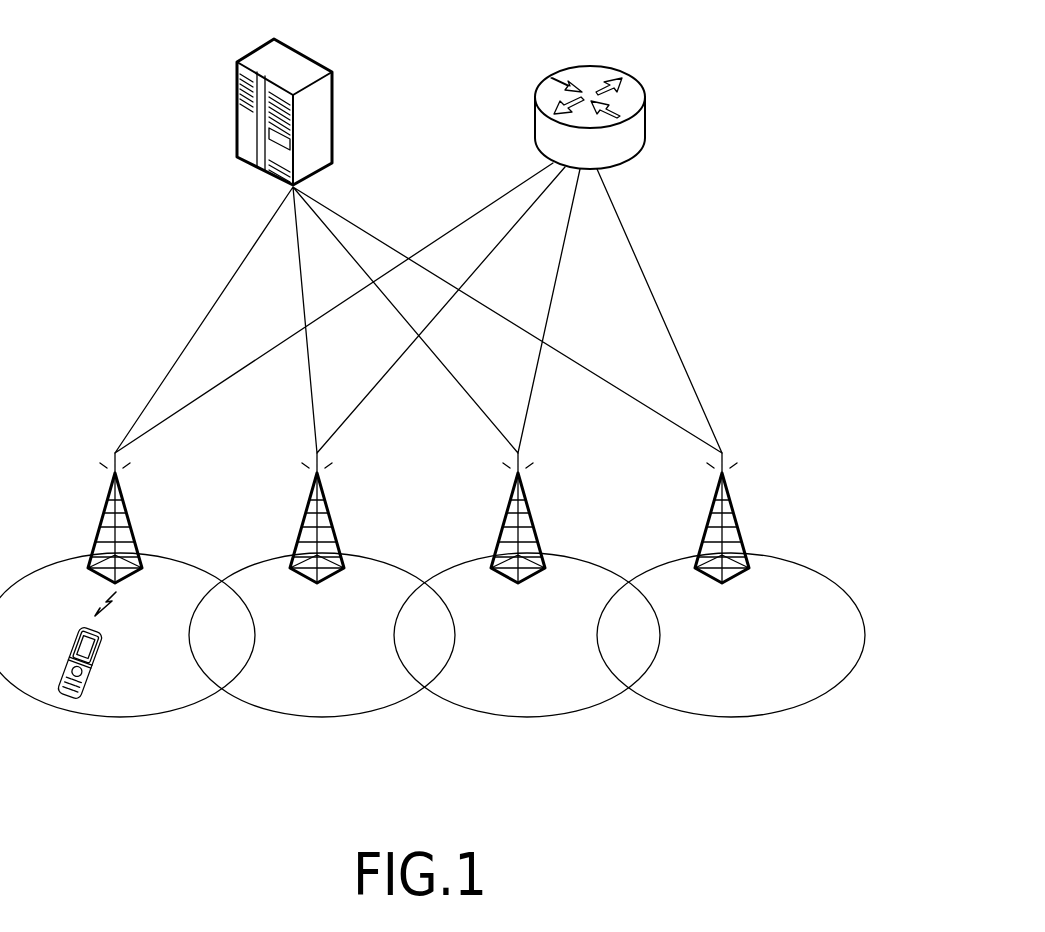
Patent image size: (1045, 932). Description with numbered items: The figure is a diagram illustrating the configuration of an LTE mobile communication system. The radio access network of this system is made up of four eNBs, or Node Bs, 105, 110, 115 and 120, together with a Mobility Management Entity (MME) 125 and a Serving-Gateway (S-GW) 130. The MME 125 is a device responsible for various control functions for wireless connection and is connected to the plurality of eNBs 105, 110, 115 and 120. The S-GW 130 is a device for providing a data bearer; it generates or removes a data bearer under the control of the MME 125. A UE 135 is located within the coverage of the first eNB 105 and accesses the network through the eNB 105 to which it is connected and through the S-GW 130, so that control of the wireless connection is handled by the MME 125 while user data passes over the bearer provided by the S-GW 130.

The eNB 105 is at (128, 527).
The eNB 110 is at (330, 527).
The eNB 115 is at (531, 527).
The eNB 120 is at (735, 527).
The Mobility Management Entity (MME) 125 is at (301, 52).
The Serving-Gateway (S-GW) 130 is at (588, 65).
The UE 135 is at (100, 653).